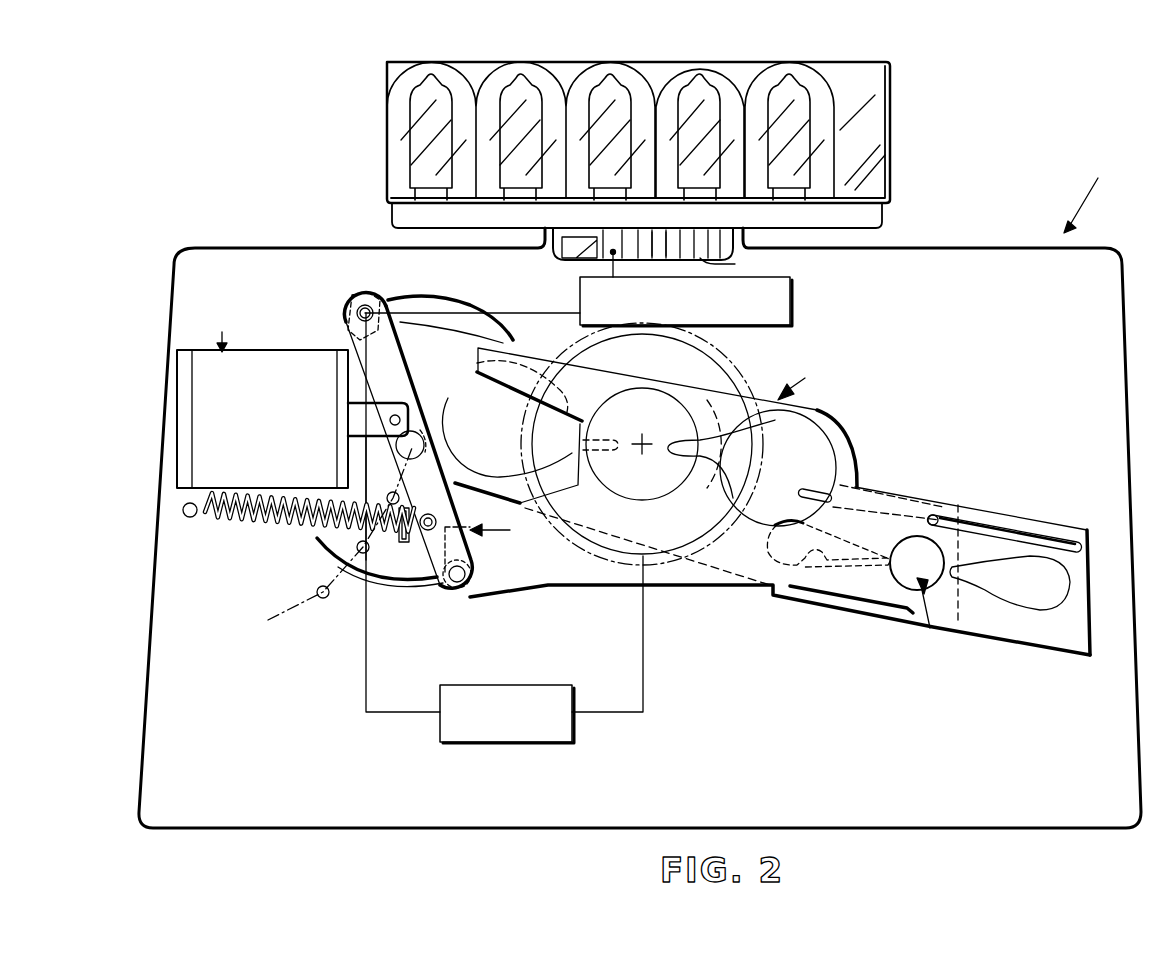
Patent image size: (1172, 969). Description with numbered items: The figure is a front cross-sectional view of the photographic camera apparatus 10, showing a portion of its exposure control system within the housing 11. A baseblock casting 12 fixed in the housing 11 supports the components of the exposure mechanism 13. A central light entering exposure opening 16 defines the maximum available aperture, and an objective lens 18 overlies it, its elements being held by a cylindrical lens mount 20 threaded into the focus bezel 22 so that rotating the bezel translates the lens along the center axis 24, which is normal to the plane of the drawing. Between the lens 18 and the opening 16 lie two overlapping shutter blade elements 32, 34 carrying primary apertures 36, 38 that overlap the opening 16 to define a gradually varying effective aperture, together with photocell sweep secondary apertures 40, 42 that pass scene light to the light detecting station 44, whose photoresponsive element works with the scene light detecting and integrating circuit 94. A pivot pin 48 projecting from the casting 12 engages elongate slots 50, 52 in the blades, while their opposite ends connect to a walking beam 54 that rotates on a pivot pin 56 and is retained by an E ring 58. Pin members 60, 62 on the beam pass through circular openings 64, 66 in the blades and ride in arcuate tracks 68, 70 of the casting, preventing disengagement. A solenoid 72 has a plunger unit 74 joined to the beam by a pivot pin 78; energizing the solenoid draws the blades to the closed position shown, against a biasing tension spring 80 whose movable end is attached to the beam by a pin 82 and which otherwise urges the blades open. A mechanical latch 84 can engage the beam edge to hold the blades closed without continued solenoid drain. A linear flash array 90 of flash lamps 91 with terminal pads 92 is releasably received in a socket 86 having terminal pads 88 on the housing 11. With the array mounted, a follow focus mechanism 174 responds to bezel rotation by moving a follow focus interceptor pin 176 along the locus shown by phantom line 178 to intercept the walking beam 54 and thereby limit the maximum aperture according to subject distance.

The photographic camera apparatus 10 is at (1093, 192).
The housing 11 is at (1122, 342).
The baseblock casting 12 is at (876, 395).
The exposure mechanism 13 is at (845, 473).
The light entering exposure opening 16 is at (660, 478).
The objective lens 18 is at (653, 426).
The lens mount 20 is at (722, 378).
The focus bezel 22 is at (758, 441).
The center axis 24 is at (645, 457).
The shutter blade element 32 is at (452, 332).
The shutter blade element 34 is at (690, 586).
The primary aperture 36 is at (450, 414).
The primary aperture 38 is at (725, 498).
The photocell sweep secondary aperture 40 is at (825, 558).
The photocell sweep secondary aperture 42 is at (1040, 602).
The light detecting station 44 is at (924, 577).
The pivot pin 48 is at (934, 514).
The elongate slot 50 is at (883, 508).
The elongate slot 52 is at (1040, 538).
The walking beam 54 is at (438, 440).
The pivot pin 56 is at (424, 430).
The E ring 58 is at (426, 443).
The pin member 60 is at (356, 311).
The pin member 62 is at (458, 582).
The circular opening 64 is at (366, 302).
The circular opening 66 is at (470, 566).
The arcuate track 68 is at (420, 302).
The arcuate track 70 is at (398, 585).
The solenoid 72 is at (262, 400).
The plunger unit 74 is at (372, 440).
The pivot pin 78 is at (394, 414).
The biasing tension spring 80 is at (248, 526).
The pin 82 is at (428, 513).
The mechanical latch 84 is at (404, 542).
The receiving socket 86 is at (722, 238).
The terminal pads 88 is at (729, 263).
The linear flash array 90 is at (894, 117).
The flash lamps 91 is at (784, 62).
The terminal pads 92 is at (668, 240).
The scene light detecting and integrating circuit 94 is at (575, 258).
The follow focus mechanism 174 is at (510, 743).
The follow focus interceptor pin 176 is at (322, 535).
The phantom line 178 is at (337, 585).